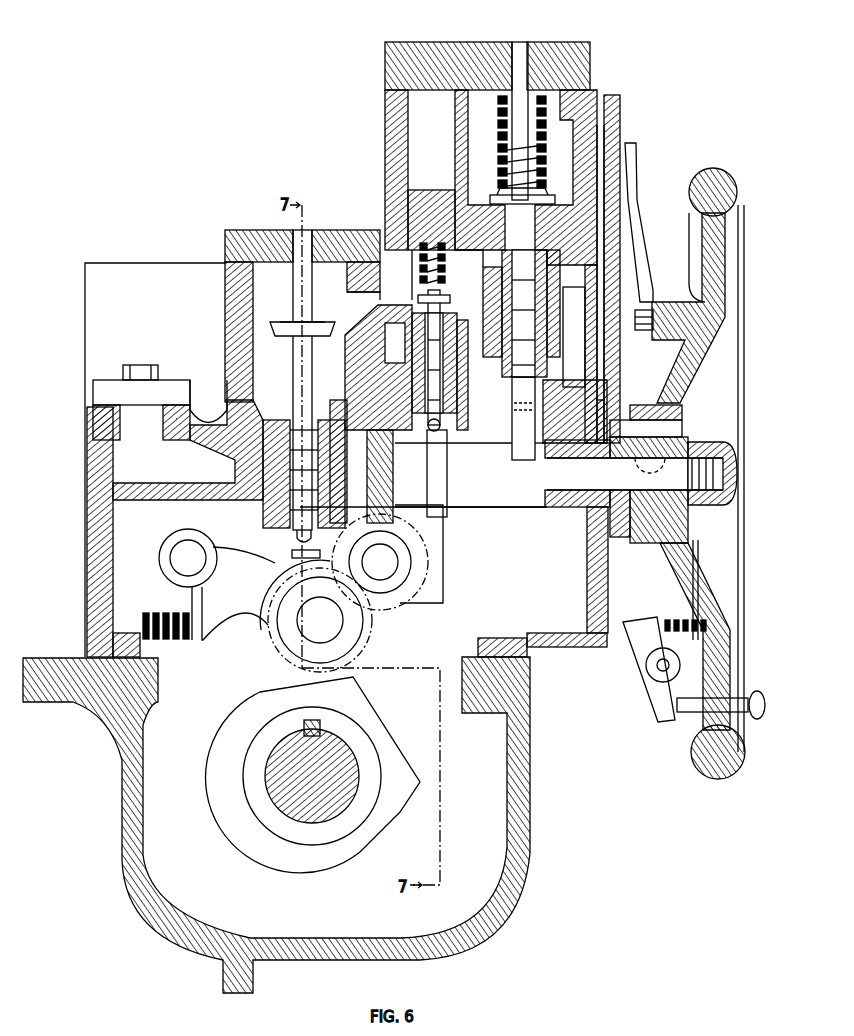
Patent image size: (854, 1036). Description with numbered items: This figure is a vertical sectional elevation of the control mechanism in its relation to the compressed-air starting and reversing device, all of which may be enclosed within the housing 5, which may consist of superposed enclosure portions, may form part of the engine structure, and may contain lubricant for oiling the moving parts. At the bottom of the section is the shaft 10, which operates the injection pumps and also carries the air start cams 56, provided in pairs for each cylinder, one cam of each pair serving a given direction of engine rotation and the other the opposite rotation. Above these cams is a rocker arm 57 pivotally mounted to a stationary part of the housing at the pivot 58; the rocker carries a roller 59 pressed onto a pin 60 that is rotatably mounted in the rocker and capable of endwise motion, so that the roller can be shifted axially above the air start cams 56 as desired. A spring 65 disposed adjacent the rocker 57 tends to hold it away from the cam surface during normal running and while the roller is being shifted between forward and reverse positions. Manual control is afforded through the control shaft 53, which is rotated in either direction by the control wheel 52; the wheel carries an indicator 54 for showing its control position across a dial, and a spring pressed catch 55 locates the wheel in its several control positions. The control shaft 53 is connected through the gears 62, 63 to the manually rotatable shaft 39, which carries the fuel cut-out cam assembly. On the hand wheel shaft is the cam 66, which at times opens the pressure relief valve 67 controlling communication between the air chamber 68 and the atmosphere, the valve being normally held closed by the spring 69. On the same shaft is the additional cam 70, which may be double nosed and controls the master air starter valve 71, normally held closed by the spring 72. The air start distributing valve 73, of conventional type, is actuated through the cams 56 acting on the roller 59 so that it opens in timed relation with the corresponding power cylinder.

The housing 5 is at (228, 300).
The shaft 10 is at (272, 790).
The manually rotatable shaft 39 is at (395, 568).
The control wheel 52 is at (744, 346).
The control shaft 53 is at (482, 505).
The indicator 54 is at (640, 168).
The spring pressed catch 55 is at (633, 643).
The air start cams 56 is at (370, 690).
The rocker arms 57 is at (252, 622).
The pivot 58 is at (182, 559).
The roller 59 is at (358, 635).
The pins 60 is at (305, 628).
The gear 62 is at (383, 430).
The gear 63 is at (403, 608).
The spring 65 is at (175, 642).
The cam 66 is at (446, 437).
The pressure relief valve 67 is at (445, 300).
The air chamber 68 is at (415, 281).
The spring 69 is at (450, 273).
The cam 70 is at (537, 416).
The master air starter valve 71 is at (505, 195).
The spring 72 is at (500, 160).
The air start distributing valves 73 is at (322, 322).